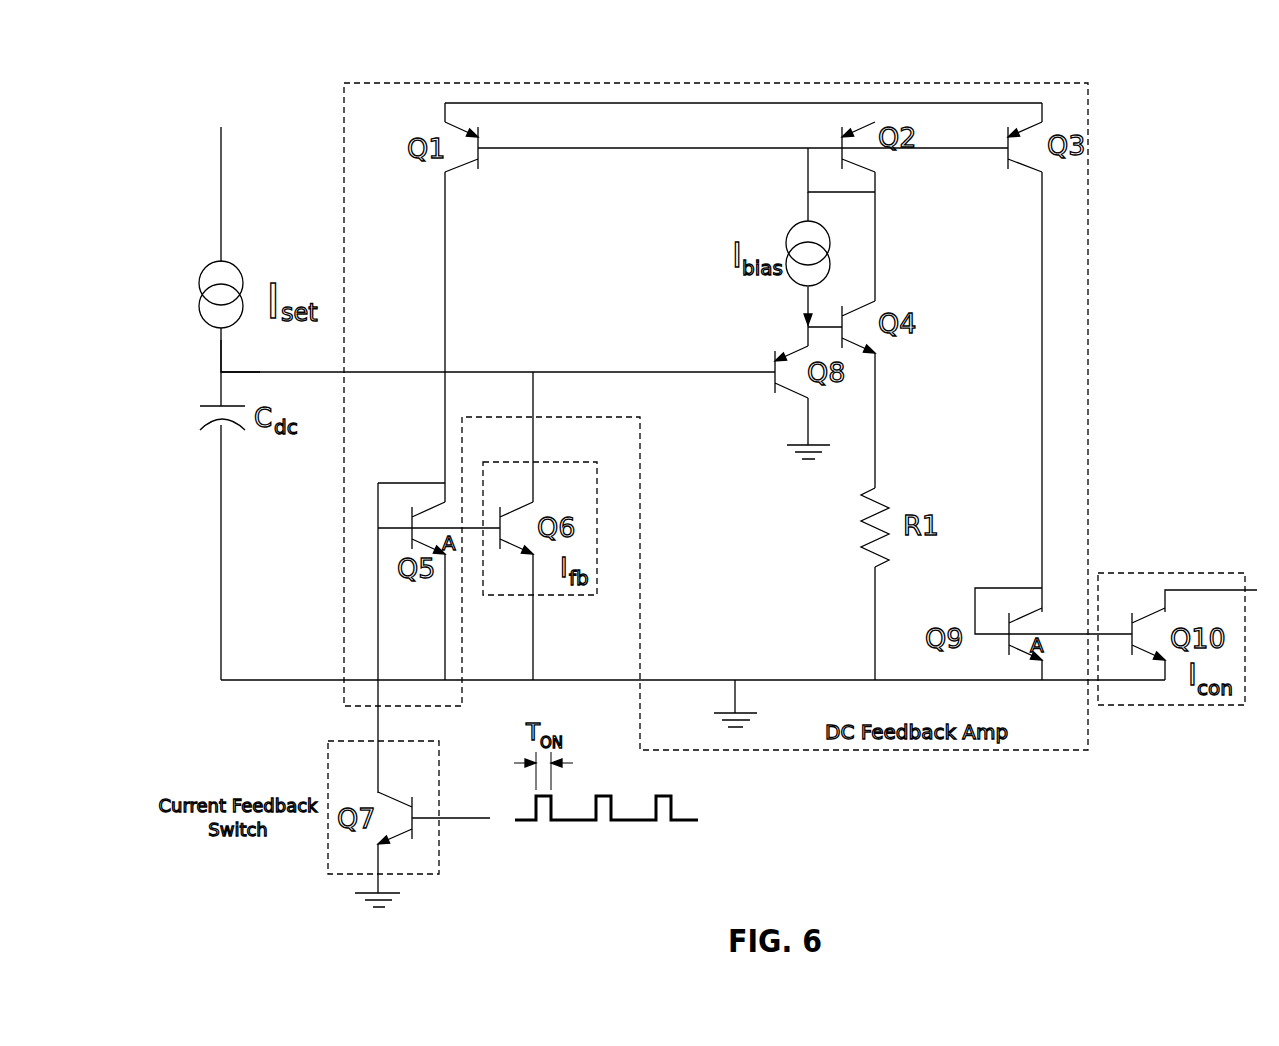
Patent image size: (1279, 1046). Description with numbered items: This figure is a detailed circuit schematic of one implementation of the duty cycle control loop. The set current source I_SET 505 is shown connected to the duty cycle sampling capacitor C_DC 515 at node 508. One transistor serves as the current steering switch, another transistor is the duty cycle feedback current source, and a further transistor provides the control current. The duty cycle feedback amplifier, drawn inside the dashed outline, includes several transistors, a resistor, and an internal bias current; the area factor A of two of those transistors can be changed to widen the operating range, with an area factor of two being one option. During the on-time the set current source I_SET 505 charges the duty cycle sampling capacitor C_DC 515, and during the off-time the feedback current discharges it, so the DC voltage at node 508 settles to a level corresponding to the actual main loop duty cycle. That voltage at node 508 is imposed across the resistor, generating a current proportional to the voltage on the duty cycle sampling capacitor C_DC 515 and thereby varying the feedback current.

The constant current source I_SET 505 is at (226, 262).
The node 508 is at (222, 370).
The duty cycle sampling capacitor C_DC 515 is at (227, 424).